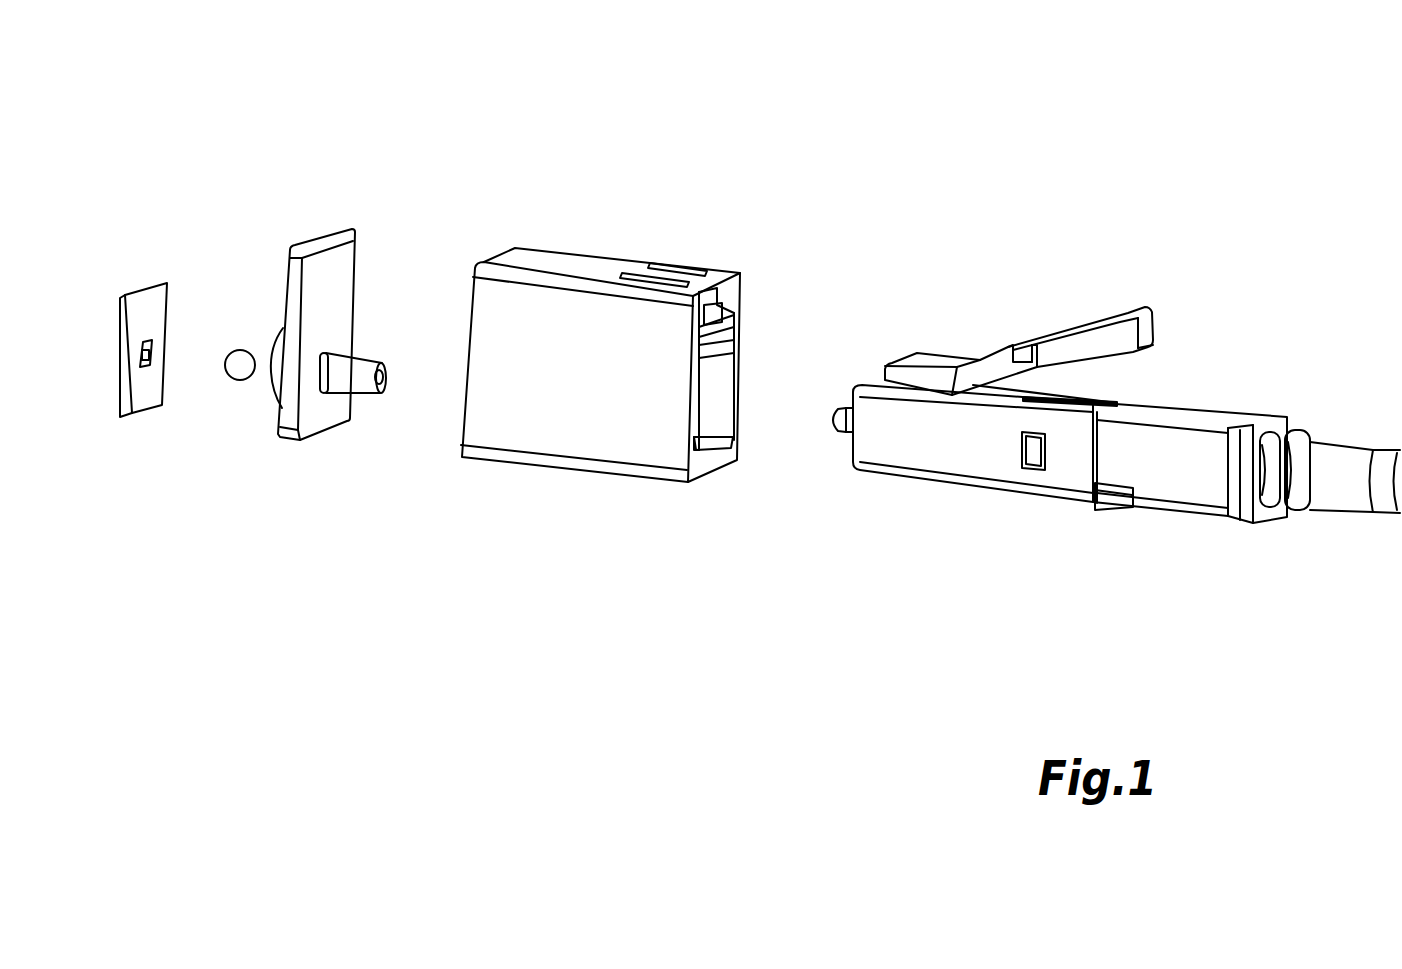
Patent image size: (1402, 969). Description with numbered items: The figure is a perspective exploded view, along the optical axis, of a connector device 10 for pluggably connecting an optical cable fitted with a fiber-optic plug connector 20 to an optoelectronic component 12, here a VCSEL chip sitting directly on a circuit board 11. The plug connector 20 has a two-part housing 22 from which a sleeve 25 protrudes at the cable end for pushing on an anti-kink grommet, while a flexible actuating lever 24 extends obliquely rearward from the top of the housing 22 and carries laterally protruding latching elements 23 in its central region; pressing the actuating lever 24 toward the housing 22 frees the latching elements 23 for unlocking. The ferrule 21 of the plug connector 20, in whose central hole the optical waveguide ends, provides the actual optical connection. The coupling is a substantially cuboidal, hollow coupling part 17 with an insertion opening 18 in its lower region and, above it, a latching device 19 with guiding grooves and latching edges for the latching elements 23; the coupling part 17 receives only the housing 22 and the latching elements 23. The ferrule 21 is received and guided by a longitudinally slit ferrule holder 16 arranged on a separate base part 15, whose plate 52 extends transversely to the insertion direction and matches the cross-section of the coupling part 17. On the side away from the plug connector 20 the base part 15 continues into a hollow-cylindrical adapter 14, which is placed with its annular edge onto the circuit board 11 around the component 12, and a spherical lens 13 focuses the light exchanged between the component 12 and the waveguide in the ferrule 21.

The connector device 10 is at (553, 590).
The circuit board 11 is at (155, 308).
The optoelectronic component 12 is at (147, 368).
The spherical lens 13 is at (243, 367).
The adapter 14 is at (283, 347).
The base part 15 is at (360, 190).
The plate 52 is at (338, 292).
The ferrule holder 16 is at (348, 385).
The coupling part 17 is at (595, 315).
The insertion opening 18 is at (710, 427).
The latching device 19 is at (720, 317).
The fiber-optic plug connector 20 is at (948, 270).
The ferrule 21 is at (843, 430).
The housing 22 is at (973, 450).
The latching elements 23 is at (1018, 348).
The actuating lever 24 is at (1103, 345).
The sleeve 25 is at (1327, 475).